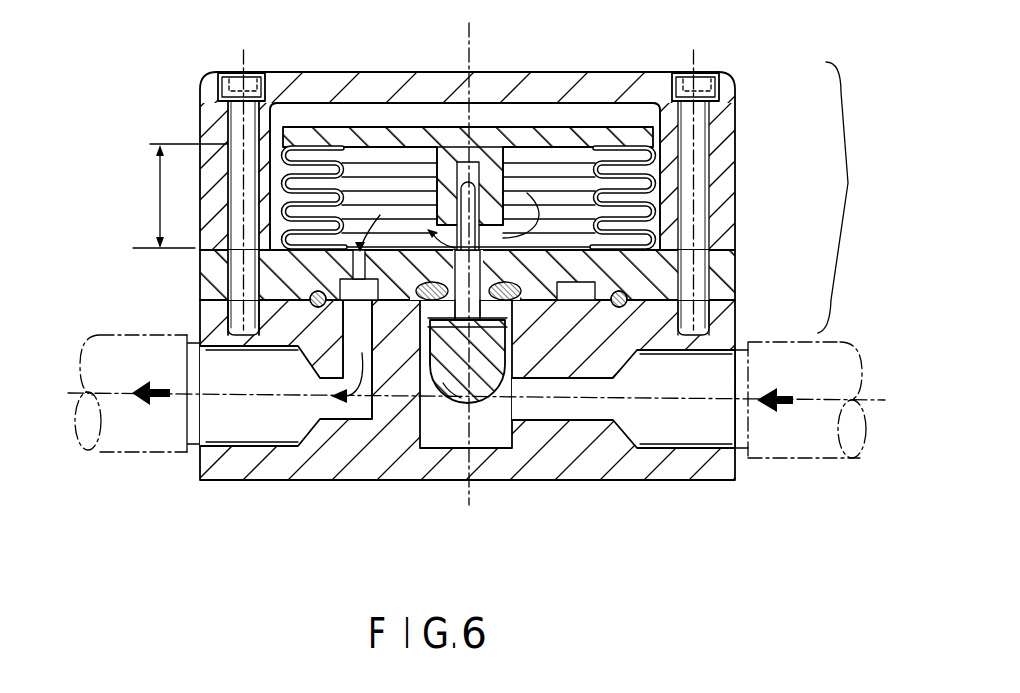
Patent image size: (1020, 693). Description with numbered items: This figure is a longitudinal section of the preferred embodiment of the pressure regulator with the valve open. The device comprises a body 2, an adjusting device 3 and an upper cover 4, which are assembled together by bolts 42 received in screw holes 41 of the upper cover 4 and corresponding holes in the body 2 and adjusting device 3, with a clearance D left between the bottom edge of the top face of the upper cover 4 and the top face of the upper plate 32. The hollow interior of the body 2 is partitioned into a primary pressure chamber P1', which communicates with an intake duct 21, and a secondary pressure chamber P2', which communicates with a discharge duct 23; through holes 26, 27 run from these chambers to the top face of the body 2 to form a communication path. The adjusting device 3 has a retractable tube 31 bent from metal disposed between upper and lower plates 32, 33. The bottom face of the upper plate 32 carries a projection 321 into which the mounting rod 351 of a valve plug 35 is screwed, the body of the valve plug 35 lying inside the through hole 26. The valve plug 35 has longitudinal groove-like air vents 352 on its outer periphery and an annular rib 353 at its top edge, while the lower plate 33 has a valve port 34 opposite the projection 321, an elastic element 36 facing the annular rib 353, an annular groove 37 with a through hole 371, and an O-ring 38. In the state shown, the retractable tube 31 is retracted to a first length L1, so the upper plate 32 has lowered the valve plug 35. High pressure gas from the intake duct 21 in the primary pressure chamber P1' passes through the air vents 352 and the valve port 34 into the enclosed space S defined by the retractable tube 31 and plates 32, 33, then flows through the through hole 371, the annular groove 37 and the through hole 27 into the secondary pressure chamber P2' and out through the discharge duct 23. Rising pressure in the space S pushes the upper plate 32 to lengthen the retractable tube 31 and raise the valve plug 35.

The body 2 is at (510, 346).
The adjusting device 3 is at (494, 281).
The upper cover 4 is at (290, 64).
The intake duct 21 is at (803, 447).
The discharge duct 23 is at (133, 437).
The through hole 26 is at (490, 430).
The through hole 27 is at (358, 405).
The retractable tube 31 is at (653, 180).
The upper plate 32 is at (653, 137).
The lower plate 33 is at (652, 217).
The valve port 34 is at (612, 247).
The valve plug 35 is at (513, 347).
The elastic element 36 is at (496, 307).
The annular groove 37 is at (647, 257).
The O-ring 38 is at (580, 293).
The screw holes 41 is at (228, 72).
The bolts 42 is at (238, 128).
The projection 321 is at (494, 160).
The mounting rod 351 is at (521, 188).
The air vents 352 is at (424, 368).
The annular rib 353 is at (443, 383).
The through hole 371 is at (356, 270).
The clearance D is at (355, 115).
The enclosed space S is at (412, 168).
The first length L1 is at (175, 196).
The primary pressure chamber P1' is at (627, 456).
The secondary pressure chamber P2' is at (286, 423).